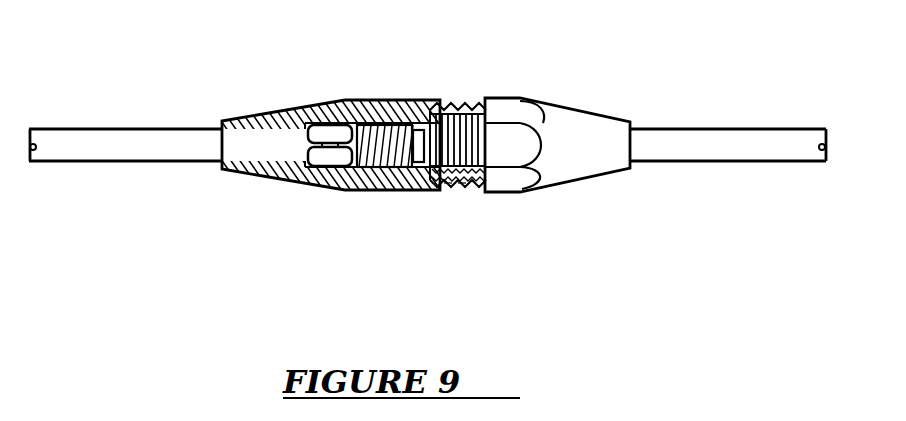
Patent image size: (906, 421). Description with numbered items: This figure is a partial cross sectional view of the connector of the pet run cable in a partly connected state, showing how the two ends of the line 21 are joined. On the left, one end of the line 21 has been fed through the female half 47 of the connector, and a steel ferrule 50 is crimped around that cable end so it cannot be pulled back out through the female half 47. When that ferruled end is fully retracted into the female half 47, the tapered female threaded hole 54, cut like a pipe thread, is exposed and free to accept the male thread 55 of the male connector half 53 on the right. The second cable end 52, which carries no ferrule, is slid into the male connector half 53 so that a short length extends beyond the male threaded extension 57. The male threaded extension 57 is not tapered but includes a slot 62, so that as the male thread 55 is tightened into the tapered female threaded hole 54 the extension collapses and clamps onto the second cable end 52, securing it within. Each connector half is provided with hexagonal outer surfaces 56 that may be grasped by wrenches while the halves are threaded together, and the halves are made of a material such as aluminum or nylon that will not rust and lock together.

The line 21 is at (103, 129).
The female half of the connector 47 is at (320, 105).
The steel ferrule 50 is at (317, 190).
The second cable end 52 is at (372, 192).
The male connector half 53 is at (530, 100).
The female threaded hole 54 is at (405, 100).
The male thread 55 is at (457, 107).
The hexagonal outer surfaces 56 is at (512, 150).
The male threaded extension 57 is at (450, 190).
The slot 62 is at (462, 188).